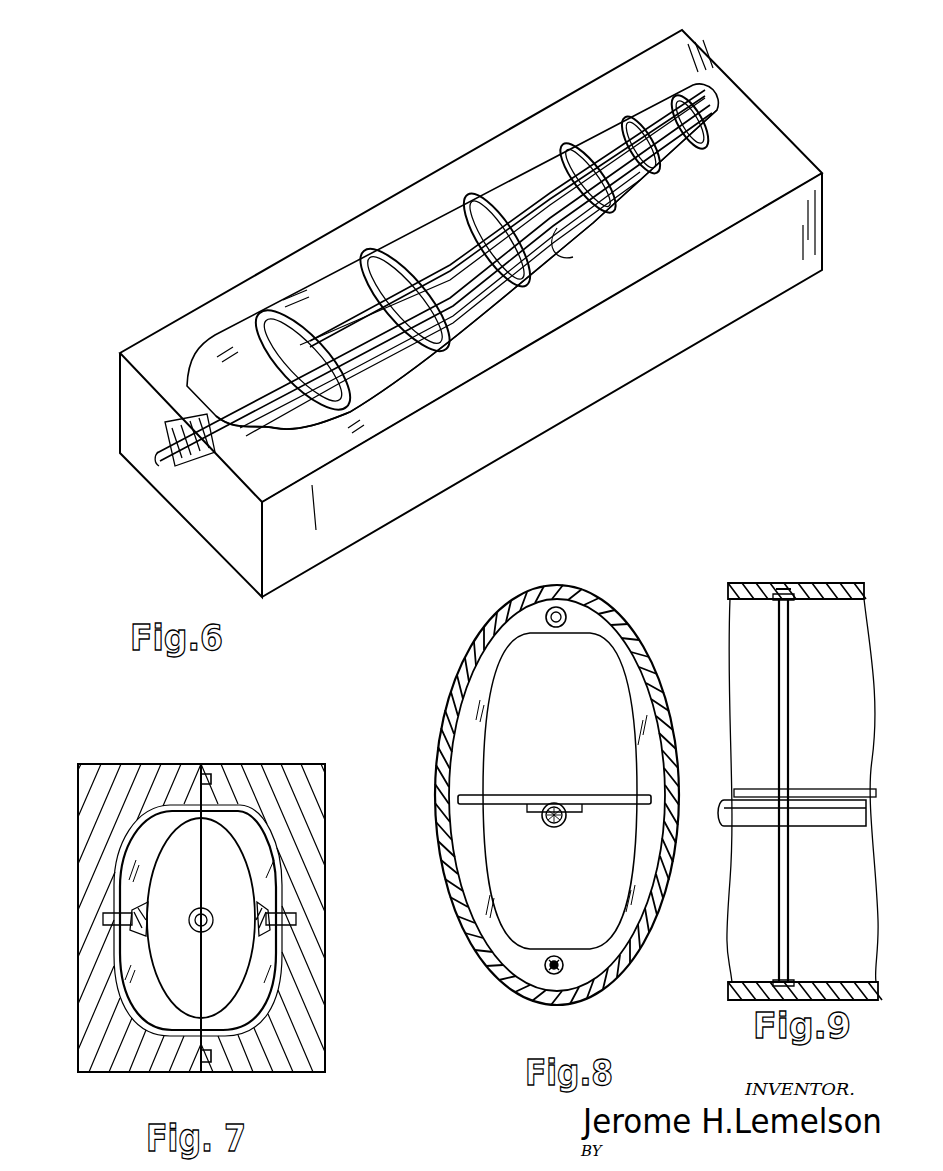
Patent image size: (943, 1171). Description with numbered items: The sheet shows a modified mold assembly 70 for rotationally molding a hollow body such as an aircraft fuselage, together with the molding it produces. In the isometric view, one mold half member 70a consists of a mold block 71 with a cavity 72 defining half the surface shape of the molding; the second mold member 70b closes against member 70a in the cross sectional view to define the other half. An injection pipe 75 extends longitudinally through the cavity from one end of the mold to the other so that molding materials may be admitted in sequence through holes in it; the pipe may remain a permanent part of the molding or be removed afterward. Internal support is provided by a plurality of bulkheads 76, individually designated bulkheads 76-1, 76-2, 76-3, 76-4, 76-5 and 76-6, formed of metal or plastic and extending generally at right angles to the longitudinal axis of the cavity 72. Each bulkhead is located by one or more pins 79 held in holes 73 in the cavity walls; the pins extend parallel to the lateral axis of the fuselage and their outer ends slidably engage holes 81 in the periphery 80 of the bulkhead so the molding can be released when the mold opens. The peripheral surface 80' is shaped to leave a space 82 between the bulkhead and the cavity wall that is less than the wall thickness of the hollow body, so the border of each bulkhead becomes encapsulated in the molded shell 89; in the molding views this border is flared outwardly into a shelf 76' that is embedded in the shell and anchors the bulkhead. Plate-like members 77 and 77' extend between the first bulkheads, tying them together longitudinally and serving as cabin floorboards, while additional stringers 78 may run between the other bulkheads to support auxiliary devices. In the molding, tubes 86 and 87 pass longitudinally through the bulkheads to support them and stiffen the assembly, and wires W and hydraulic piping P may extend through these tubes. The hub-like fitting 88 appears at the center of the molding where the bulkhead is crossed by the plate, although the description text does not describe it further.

In FIG. 6, the mold assembly 70 is at (721, 64).
In FIG. 6, the mold half member 70a is at (765, 135).
In FIG. 7, the mold half member 70a is at (128, 766).
In FIG. 7, the second mold member 70b is at (289, 764).
In FIG. 6, the mold block 71 is at (793, 158).
In FIG. 6, the cavity 72 is at (595, 223).
In FIG. 7, the holes 73 is at (293, 929).
In FIG. 6, the injection pipe 75 is at (176, 474).
In FIG. 6, the bulkheads 76 is at (467, 256).
In FIG. 9, the bulkheads 76 is at (802, 790).
In FIG. 6, the first bulkhead 76-1 is at (273, 376).
In FIG. 6, the second bulkhead 76-2 is at (398, 230).
In FIG. 6, the third bulkhead 76-3 is at (498, 190).
In FIG. 6, the fourth bulkhead 76-4 is at (572, 142).
In FIG. 6, the fifth bulkhead 76-5 is at (663, 167).
In FIG. 6, the sixth bulkhead 76-6 is at (698, 140).
In FIG. 9, the shelf 76' is at (767, 570).
In FIG. 6, the plate-like member 77 is at (434, 279).
In FIG. 8, the plate-like member 77 is at (554, 783).
In FIG. 6, the plate-like member 77' is at (507, 218).
In FIG. 6, the stringers 78 is at (573, 257).
In FIG. 7, the stringers 78 is at (255, 999).
In FIG. 6, the pins 79 is at (300, 416).
In FIG. 7, the pins 79 is at (311, 918).
In FIG. 7, the periphery 80 is at (198, 920).
In FIG. 8, the periphery 80 is at (582, 796).
In FIG. 9, the periphery 80 is at (802, 790).
In FIG. 7, the peripheral surface 80' is at (201, 918).
In FIG. 7, the holes 81 is at (146, 911).
In FIG. 7, the space 82 is at (318, 840).
In FIG. 8, the tube 86 is at (556, 627).
In FIG. 8, the tube 87 is at (559, 957).
In FIG. 8, the hub / cross bar 88 is at (560, 834).
In FIG. 9, the hub / cross bar 88 is at (736, 832).
In FIG. 8, the molded shell 89 is at (500, 982).
In FIG. 9, the molded shell 89 is at (730, 995).
In FIG. 8, the piping P is at (564, 964).
In FIG. 8, the wires W is at (546, 818).